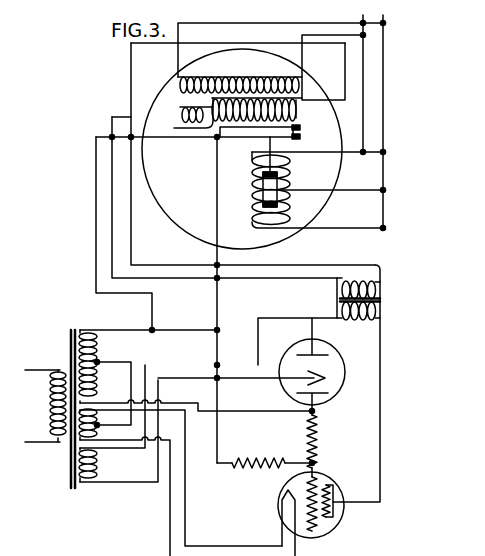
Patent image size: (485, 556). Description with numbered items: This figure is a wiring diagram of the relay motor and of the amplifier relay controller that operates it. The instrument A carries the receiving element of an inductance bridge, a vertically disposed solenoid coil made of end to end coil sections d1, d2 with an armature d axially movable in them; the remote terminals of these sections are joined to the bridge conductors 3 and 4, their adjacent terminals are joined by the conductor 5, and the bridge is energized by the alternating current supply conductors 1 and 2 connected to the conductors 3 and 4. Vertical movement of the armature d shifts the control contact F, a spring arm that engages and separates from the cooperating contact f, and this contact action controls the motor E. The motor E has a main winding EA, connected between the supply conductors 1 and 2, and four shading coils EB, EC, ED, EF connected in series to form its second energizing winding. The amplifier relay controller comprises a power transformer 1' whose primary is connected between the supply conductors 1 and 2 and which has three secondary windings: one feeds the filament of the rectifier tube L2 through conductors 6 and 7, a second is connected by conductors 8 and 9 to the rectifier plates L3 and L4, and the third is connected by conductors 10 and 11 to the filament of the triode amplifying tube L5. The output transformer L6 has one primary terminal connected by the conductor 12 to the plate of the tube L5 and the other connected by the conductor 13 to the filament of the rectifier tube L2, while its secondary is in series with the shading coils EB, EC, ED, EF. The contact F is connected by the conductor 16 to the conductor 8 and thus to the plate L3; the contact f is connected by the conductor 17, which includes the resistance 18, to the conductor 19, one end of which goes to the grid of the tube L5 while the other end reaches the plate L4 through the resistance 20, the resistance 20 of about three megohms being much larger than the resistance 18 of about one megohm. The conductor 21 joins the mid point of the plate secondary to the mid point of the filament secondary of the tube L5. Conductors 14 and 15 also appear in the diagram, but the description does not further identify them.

The alternating current supply conductor 1 is at (203, 232).
The power transformer 1' is at (71, 402).
The alternating current supply conductor 2 is at (308, 60).
The bridge conductor 3 is at (342, 228).
The bridge conductor 4 is at (357, 154).
The conductor 5 is at (298, 190).
The conductor 6 is at (127, 450).
The conductor 7 is at (136, 482).
The conductor 8 is at (172, 330).
The conductor 9 is at (112, 403).
The conductor 10 is at (212, 546).
The conductor 11 is at (170, 507).
The conductor 12 is at (381, 443).
The conductor 13 is at (288, 318).
The lead 14 is at (253, 280).
The lead 15 is at (151, 265).
The conductor 16 is at (96, 174).
The conductor 17 is at (216, 223).
The resistance 18 is at (248, 460).
The conductor 19 is at (318, 465).
The resistance 20 is at (319, 437).
The conductor 21 is at (120, 362).
The instrument A is at (153, 192).
The motor E is at (176, 50).
The main winding EA is at (250, 76).
The shading coil EB is at (184, 108).
The shading coil EC is at (180, 119).
The shading coil ED is at (257, 105).
The shading coil EF is at (298, 118).
The cooperating contact f is at (301, 128).
The control contact F is at (301, 138).
The armature d is at (253, 190).
The coil section d1 is at (253, 219).
The coil section d2 is at (253, 161).
The rectifier tube L2 is at (326, 349).
The rectifier tube plate L3 is at (338, 363).
The rectifier tube plate L4 is at (342, 392).
The triode amplifying tube L5 is at (339, 521).
The output transformer L6 is at (380, 300).